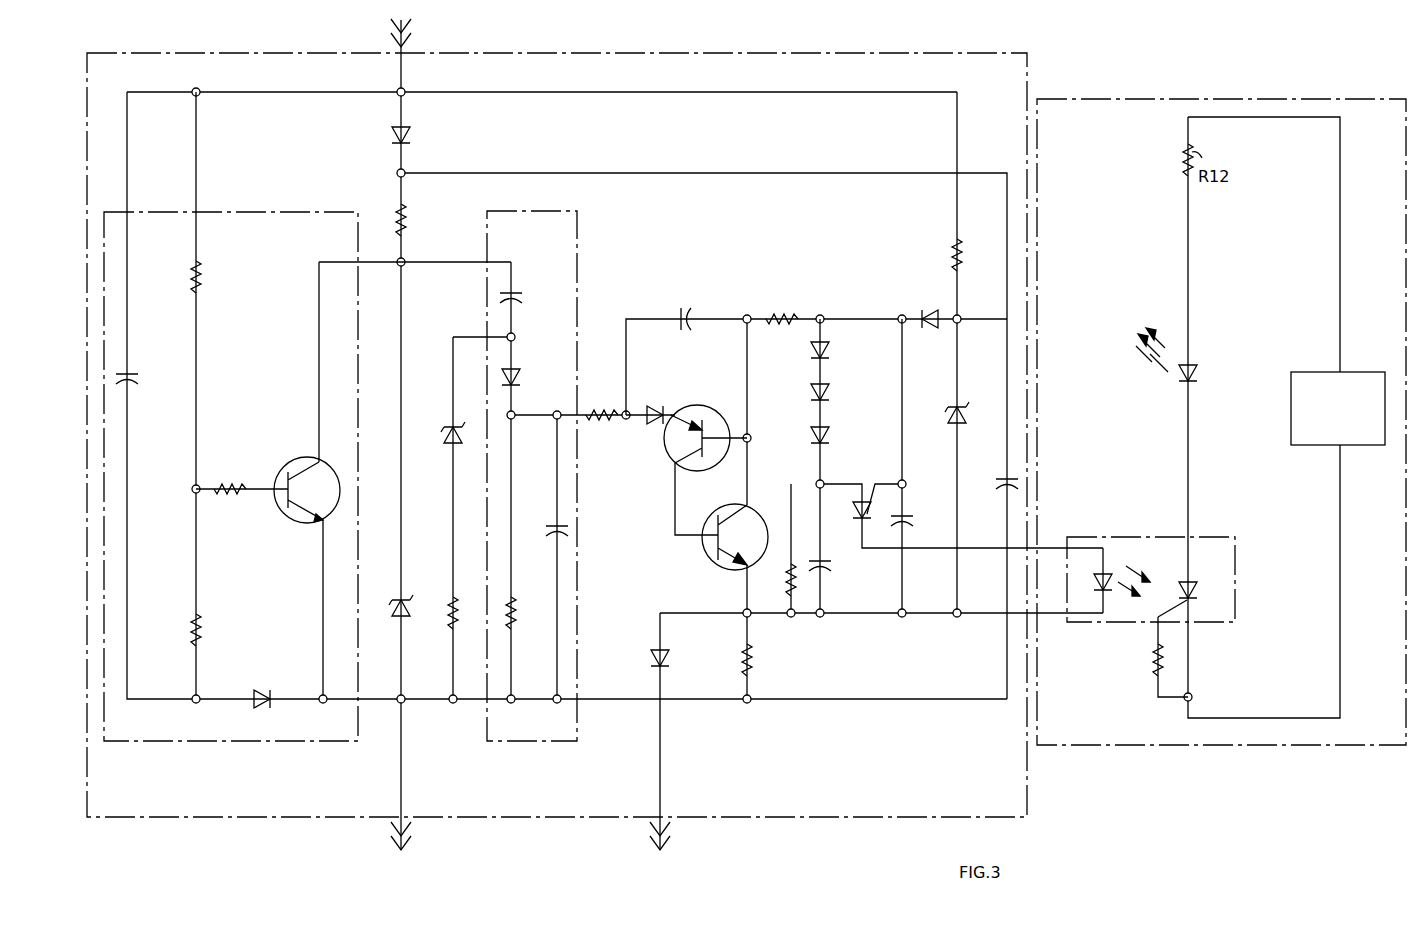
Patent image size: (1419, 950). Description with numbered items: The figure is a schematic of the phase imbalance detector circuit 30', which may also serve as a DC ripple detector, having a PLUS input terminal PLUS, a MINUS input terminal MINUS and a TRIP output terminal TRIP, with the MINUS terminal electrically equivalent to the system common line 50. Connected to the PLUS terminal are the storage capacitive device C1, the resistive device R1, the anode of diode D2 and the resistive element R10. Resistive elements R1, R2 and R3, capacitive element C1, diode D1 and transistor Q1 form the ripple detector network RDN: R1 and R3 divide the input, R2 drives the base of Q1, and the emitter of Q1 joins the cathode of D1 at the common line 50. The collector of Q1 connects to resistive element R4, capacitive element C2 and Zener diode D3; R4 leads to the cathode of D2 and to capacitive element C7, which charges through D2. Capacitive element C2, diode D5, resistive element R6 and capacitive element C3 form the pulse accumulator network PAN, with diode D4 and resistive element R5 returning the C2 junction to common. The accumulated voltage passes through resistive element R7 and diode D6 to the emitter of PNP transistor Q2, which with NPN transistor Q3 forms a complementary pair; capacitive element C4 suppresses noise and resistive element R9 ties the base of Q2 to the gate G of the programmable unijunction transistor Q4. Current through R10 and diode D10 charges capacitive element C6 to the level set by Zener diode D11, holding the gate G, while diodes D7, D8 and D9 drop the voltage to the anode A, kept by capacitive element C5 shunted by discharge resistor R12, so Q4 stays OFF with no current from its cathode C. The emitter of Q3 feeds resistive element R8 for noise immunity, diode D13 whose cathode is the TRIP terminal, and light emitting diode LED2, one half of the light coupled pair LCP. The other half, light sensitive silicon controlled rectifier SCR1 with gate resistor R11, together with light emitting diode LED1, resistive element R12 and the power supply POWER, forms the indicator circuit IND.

The phase imbalance detector circuit 30' is at (710, 27).
The system common line 50 is at (420, 704).
The diode D1 is at (265, 686).
The diode D2 is at (408, 140).
The Zener diode D3 is at (410, 604).
The diode D4 is at (462, 432).
The diode D5 is at (518, 380).
The diode D6 is at (648, 410).
The diode D7 is at (828, 352).
The diode D8 is at (828, 394).
The diode D9 is at (828, 437).
The diode D10 is at (938, 310).
The Zener diode D11 is at (964, 414).
The diode D13 is at (668, 660).
The resistive device R1 is at (200, 278).
The resistive element R2 is at (231, 485).
The resistive element R3 is at (201, 630).
The resistive element R4 is at (406, 222).
The resistive element R5 is at (464, 620).
The resistive element R6 is at (515, 612).
The resistive element R7 is at (604, 404).
The resistive element R8 is at (752, 660).
The resistive element R9 is at (774, 316).
The resistive element R10 is at (962, 256).
The resistive element R11 is at (1156, 652).
The resistive element R12 is at (786, 578).
The storage capacitive device C1 is at (132, 382).
The capacitive element C2 is at (518, 300).
The capacitive element C3 is at (552, 522).
The capacitive element C4 is at (692, 318).
The capacitive element C5 is at (826, 568).
The capacitive element C6 is at (908, 522).
The capacitive element C7 is at (998, 490).
The transistor Q1 is at (290, 510).
The PNP transistor Q2 is at (724, 424).
The NPN transistor Q3 is at (706, 562).
The programmable unijunction transistor Q4 is at (856, 512).
The anode A is at (822, 480).
The gate G is at (904, 480).
The cathode C is at (875, 531).
The light emitting diode LED1 is at (1196, 376).
The light emitting diode LED2 is at (1112, 570).
The light sensitive silicon controlled rectifier SCR1 is at (1196, 596).
The ripple detector network RDN is at (231, 476).
The pulse accumulator network PAN is at (532, 476).
The light coupled pair LCP is at (1151, 567).
The indicator circuit IND is at (1221, 422).
The power supply POWER is at (1338, 408).
The PLUS input terminal PLUS is at (450, 40).
The MINUS input terminal MINUS is at (445, 824).
The TRIP output terminal TRIP is at (682, 839).